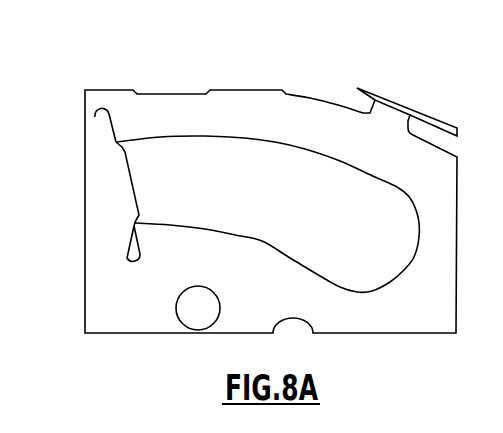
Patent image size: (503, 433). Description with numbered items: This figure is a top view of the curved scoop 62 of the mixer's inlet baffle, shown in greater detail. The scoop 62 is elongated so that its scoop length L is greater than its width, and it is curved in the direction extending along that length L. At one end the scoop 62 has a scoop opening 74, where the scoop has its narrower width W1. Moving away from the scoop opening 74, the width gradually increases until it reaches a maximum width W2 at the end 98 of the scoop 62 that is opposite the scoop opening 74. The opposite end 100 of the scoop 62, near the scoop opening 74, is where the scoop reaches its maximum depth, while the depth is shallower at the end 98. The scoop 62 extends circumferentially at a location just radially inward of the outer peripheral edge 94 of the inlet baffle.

The first scoop 62 is at (277, 173).
The scoop opening 74 is at (125, 193).
The outer peripheral edge 94 is at (405, 105).
The end of the scoop 98 is at (418, 248).
The end of the scoop 100 is at (132, 140).
The narrower width W1 is at (171, 257).
The maximum width W2 is at (318, 320).
The scoop length L is at (412, 258).